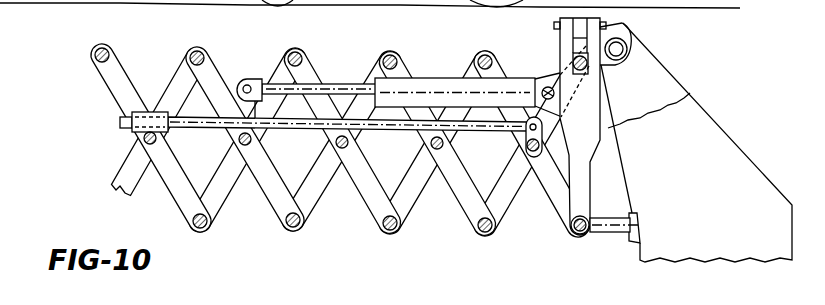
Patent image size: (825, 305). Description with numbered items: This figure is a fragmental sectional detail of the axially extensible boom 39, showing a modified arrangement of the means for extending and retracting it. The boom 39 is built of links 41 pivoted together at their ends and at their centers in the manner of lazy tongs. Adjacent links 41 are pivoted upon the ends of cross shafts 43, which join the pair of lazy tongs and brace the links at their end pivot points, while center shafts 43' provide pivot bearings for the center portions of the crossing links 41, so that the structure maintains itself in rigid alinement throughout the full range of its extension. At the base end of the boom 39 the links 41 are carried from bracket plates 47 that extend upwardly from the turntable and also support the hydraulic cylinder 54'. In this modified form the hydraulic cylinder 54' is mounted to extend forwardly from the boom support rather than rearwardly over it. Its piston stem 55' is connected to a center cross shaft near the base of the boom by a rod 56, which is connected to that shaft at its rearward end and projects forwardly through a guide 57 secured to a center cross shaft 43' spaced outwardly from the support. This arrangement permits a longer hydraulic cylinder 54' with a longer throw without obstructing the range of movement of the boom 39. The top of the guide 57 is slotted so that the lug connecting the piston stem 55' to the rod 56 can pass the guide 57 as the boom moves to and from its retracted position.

The axially extensible boom 39 is at (271, 218).
The links 41 is at (363, 191).
The cross shafts 43 is at (342, 141).
The center shafts 43' is at (341, 143).
The bracket plates 47 is at (675, 93).
The hydraulic cylinder 54' is at (468, 83).
The piston stem 55' is at (307, 88).
The rod 56 is at (385, 131).
The guide 57 is at (132, 133).